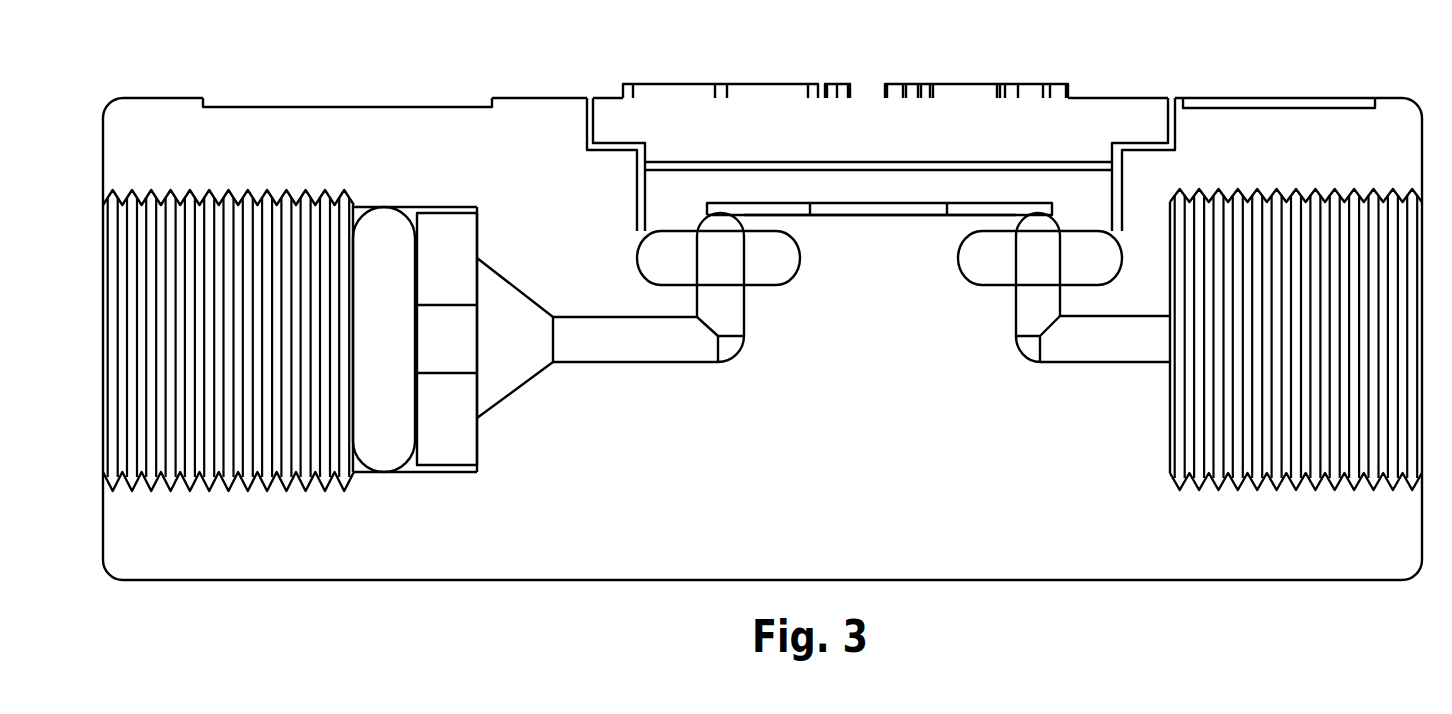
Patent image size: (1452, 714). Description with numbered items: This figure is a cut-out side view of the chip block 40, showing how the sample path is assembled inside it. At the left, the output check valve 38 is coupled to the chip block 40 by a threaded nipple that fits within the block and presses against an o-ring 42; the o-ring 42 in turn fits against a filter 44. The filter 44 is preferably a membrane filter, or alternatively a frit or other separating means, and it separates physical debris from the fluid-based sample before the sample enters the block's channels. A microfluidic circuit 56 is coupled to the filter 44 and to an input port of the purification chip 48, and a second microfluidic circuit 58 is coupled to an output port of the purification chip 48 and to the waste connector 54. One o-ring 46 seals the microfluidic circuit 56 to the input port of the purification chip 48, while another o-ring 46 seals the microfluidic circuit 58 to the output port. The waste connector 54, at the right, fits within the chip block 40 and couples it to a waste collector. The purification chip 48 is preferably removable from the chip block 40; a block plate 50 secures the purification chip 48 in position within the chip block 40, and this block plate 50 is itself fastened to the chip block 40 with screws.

The output check valve 38 is at (240, 184).
The chip block 40 is at (1030, 580).
The o-ring 42 is at (383, 213).
The filter 44 is at (445, 230).
The o-rings 46 is at (785, 270).
The purification chip 48 is at (867, 210).
The block plate 50 is at (875, 118).
The waste connector 54 is at (1233, 190).
The microfluidic circuit 56 is at (635, 343).
The microfluidic circuit 58 is at (1092, 343).